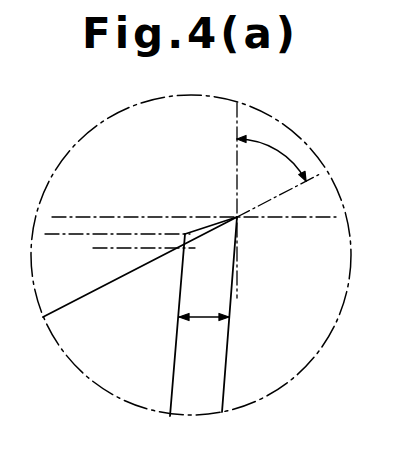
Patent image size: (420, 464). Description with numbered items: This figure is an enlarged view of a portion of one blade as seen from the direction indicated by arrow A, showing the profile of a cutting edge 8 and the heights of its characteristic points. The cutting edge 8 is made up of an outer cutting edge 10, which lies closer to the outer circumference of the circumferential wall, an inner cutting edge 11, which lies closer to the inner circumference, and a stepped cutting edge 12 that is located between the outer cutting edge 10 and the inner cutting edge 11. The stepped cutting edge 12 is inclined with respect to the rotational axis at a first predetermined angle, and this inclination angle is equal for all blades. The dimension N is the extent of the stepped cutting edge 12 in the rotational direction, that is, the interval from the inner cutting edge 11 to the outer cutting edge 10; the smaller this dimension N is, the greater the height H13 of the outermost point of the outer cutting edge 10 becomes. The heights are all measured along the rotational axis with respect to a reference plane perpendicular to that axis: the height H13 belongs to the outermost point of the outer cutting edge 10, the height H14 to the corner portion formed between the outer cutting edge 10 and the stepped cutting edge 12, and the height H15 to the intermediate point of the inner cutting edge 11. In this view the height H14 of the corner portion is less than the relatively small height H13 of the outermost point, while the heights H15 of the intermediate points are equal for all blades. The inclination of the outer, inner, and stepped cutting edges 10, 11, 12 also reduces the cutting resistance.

The arrow A viewing direction A is at (300, 137).
The cutting edge 8 is at (217, 233).
The outer cutting edge 10 is at (185, 232).
The inner cutting edge 11 is at (244, 220).
The stepped cutting edge 12 is at (212, 230).
The dimension of the stepped cutting edge N is at (203, 319).
The height of the outermost point H13 is at (71, 240).
The height of the corner portion H14 is at (109, 254).
The height of the intermediate point H15 is at (318, 225).